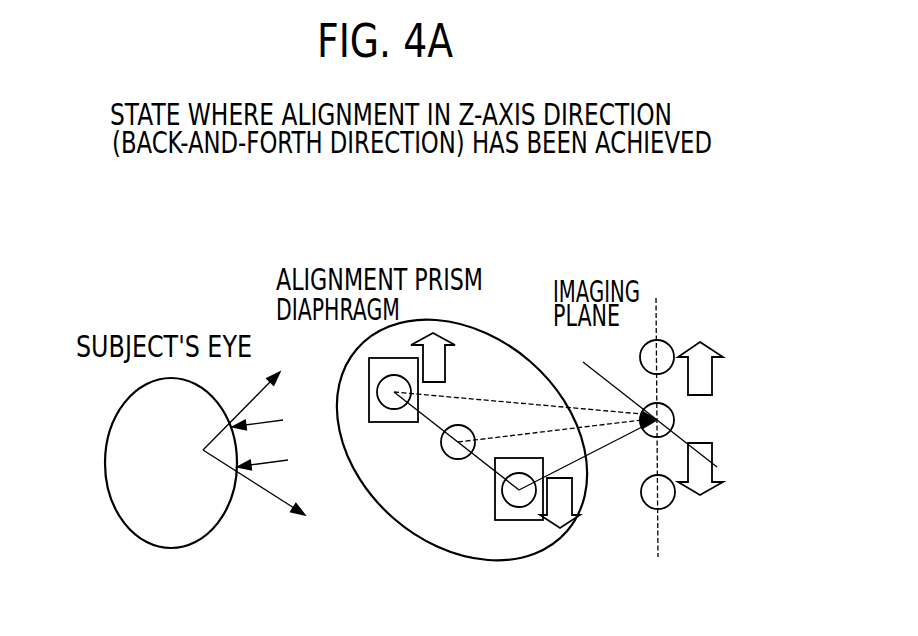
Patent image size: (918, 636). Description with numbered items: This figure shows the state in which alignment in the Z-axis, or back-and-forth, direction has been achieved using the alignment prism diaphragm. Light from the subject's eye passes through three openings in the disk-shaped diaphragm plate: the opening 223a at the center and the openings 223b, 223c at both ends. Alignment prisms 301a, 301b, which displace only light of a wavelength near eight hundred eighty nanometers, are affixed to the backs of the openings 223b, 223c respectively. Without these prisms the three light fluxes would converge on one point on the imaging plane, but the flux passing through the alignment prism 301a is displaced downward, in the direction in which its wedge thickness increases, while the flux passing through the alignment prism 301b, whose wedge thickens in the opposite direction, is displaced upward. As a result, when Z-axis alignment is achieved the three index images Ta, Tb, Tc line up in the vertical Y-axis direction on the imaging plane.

The alignment prism 301a is at (520, 520).
The alignment prism 301b is at (369, 375).
The opening 223a is at (445, 457).
The opening 223b is at (503, 497).
The opening 223c is at (378, 398).
The index image Ta is at (675, 415).
The index image Tb is at (670, 507).
The index image Tc is at (667, 341).